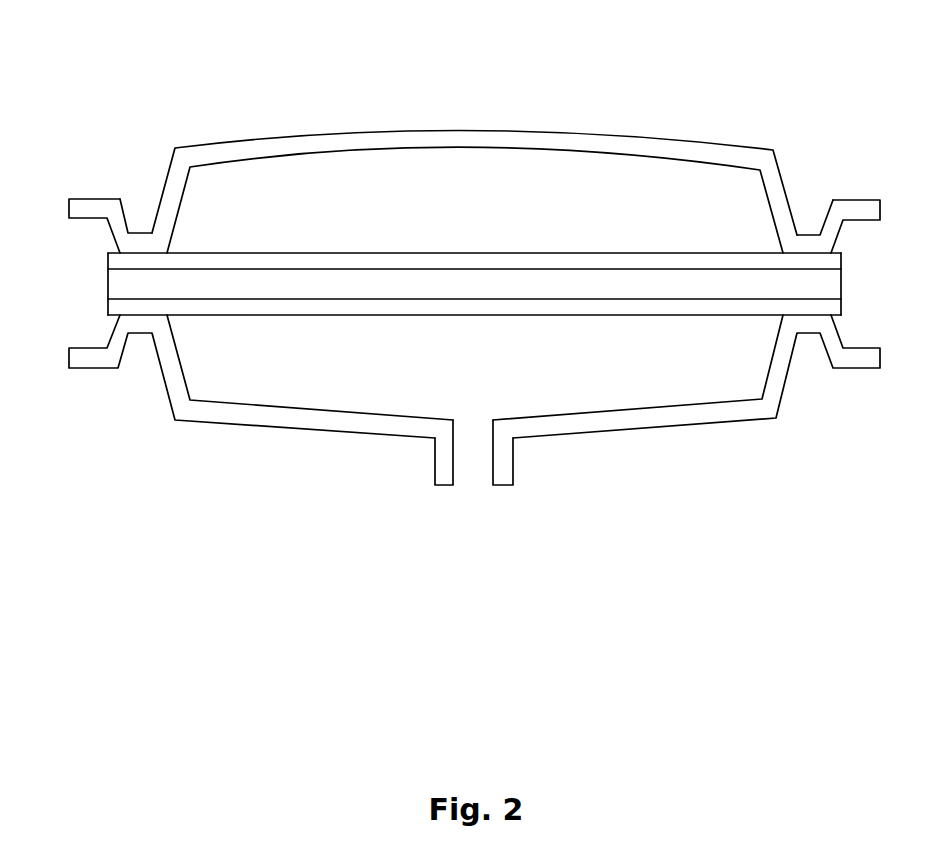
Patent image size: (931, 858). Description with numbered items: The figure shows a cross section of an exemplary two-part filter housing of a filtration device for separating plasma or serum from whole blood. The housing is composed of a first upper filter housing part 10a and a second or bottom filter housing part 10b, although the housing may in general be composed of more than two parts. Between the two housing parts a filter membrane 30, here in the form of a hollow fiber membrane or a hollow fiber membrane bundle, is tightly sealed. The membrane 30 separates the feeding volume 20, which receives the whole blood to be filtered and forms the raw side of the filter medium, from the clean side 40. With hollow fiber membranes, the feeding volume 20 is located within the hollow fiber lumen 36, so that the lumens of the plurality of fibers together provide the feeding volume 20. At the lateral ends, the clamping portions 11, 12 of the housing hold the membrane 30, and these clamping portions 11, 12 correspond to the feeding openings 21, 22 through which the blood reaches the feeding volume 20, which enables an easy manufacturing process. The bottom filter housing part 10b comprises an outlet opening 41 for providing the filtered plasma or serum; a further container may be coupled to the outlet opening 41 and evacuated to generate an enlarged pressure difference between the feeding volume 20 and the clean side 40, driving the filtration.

The first upper filter housing part 10a is at (475, 140).
The second or bottom filter housing part 10b is at (632, 422).
The clamping portion 11 is at (138, 220).
The clamping portion 12 is at (807, 223).
The feeding volume 20 is at (672, 285).
The feeding opening 21 is at (80, 258).
The feeding opening 22 is at (863, 268).
The filter membrane 30 is at (250, 260).
The hollow fiber lumen 36 is at (503, 285).
The clean side 40 is at (395, 204).
The outlet opening 41 is at (474, 468).